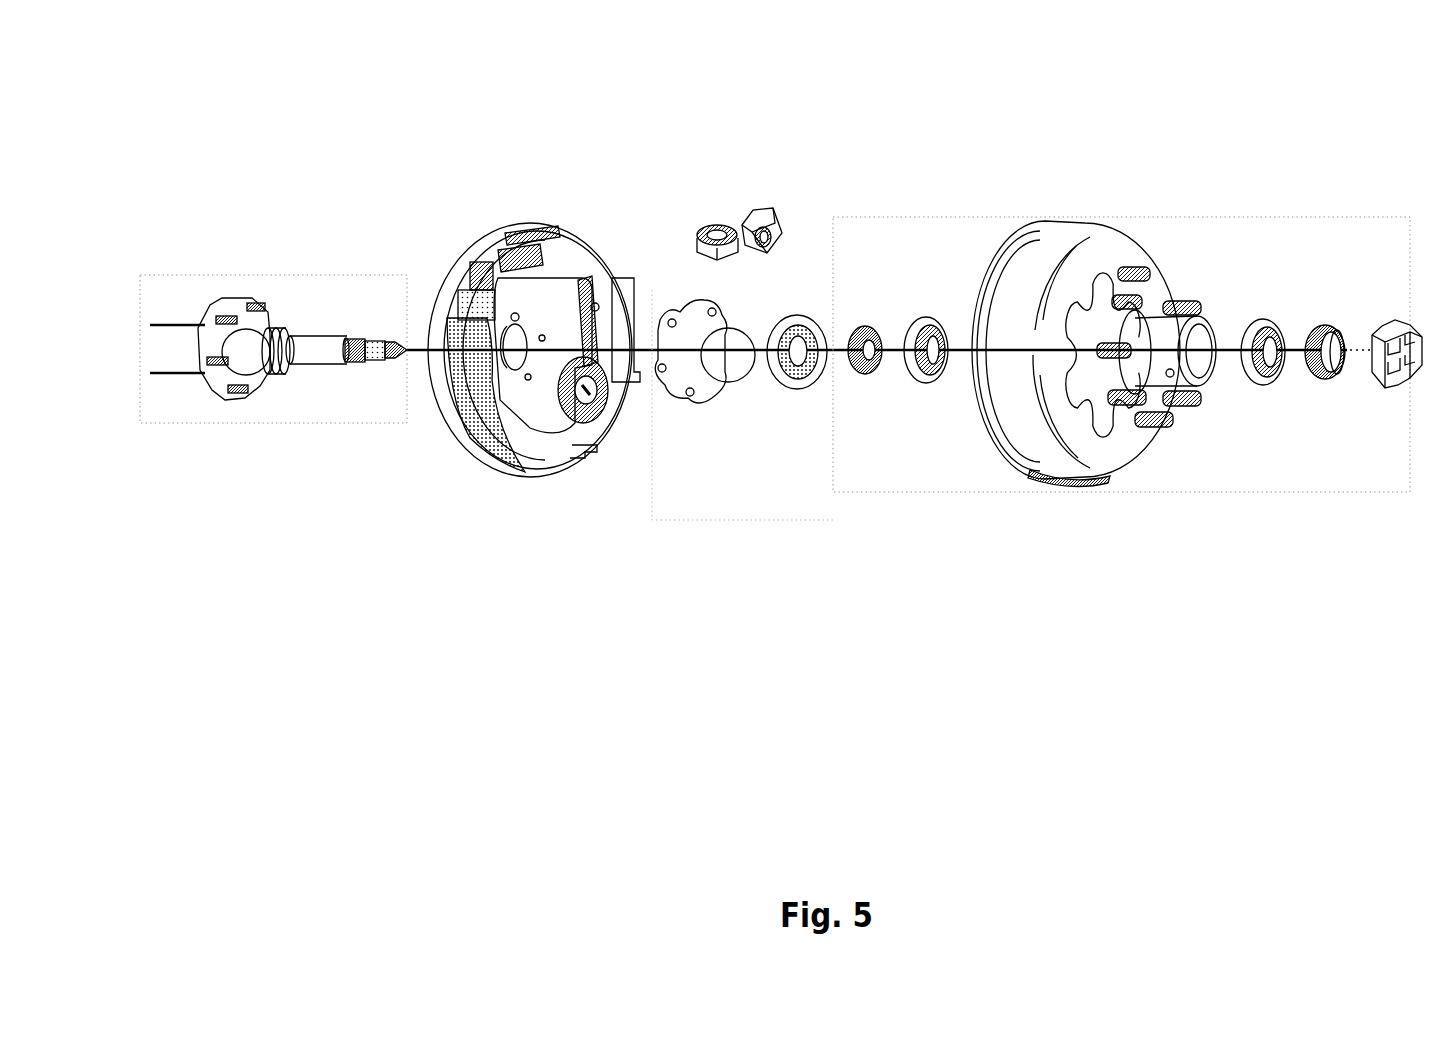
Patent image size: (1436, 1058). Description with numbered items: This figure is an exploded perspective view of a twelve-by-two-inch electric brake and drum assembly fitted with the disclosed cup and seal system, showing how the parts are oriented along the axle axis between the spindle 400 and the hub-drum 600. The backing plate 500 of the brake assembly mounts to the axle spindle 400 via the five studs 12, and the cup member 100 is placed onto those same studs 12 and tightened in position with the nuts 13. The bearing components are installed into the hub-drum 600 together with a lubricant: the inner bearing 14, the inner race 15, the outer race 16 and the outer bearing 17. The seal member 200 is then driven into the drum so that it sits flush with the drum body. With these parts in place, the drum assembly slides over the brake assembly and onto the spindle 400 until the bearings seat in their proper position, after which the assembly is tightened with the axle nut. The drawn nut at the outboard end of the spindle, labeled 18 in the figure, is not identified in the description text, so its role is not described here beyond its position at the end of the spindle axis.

The studs 12 is at (227, 308).
The nuts 13 is at (741, 207).
The inner bearing 14 is at (866, 307).
The inner race 15 is at (927, 307).
The outer race 16 is at (1268, 308).
The outer bearing 17 is at (1330, 400).
The castle nut 18 is at (1393, 317).
The cup member 100 is at (695, 428).
The seal member 200 is at (799, 420).
The spindle 400 is at (273, 333).
The backing plate 500 is at (513, 522).
The hub-drum 600 is at (1077, 522).